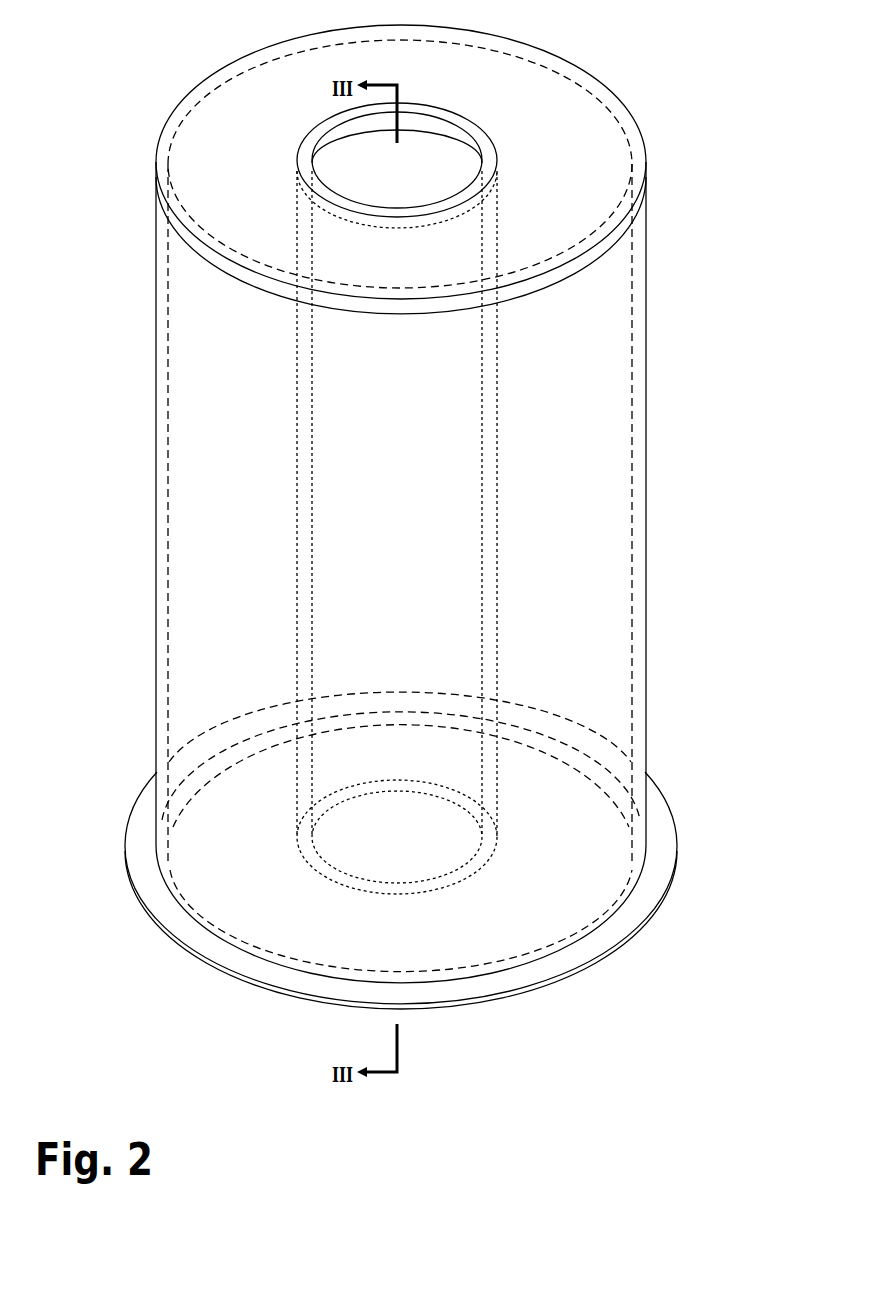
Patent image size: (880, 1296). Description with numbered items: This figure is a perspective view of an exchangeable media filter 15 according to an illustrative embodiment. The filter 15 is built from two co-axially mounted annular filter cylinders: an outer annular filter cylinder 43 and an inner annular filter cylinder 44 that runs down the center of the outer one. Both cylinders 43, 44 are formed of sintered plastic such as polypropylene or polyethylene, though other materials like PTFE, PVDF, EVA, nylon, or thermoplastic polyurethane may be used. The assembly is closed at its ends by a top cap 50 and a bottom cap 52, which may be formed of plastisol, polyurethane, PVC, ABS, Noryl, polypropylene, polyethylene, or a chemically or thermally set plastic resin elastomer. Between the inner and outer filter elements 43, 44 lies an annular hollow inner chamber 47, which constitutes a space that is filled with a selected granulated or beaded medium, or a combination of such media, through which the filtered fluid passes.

The exchangeable media filter 15 is at (433, 516).
The top cap 50 is at (250, 102).
The outer annular filter cylinder 43 is at (640, 478).
The inner annular filter cylinder 44 is at (487, 480).
The annular hollow inner chamber 47 is at (584, 549).
The bottom cap 52 is at (664, 848).